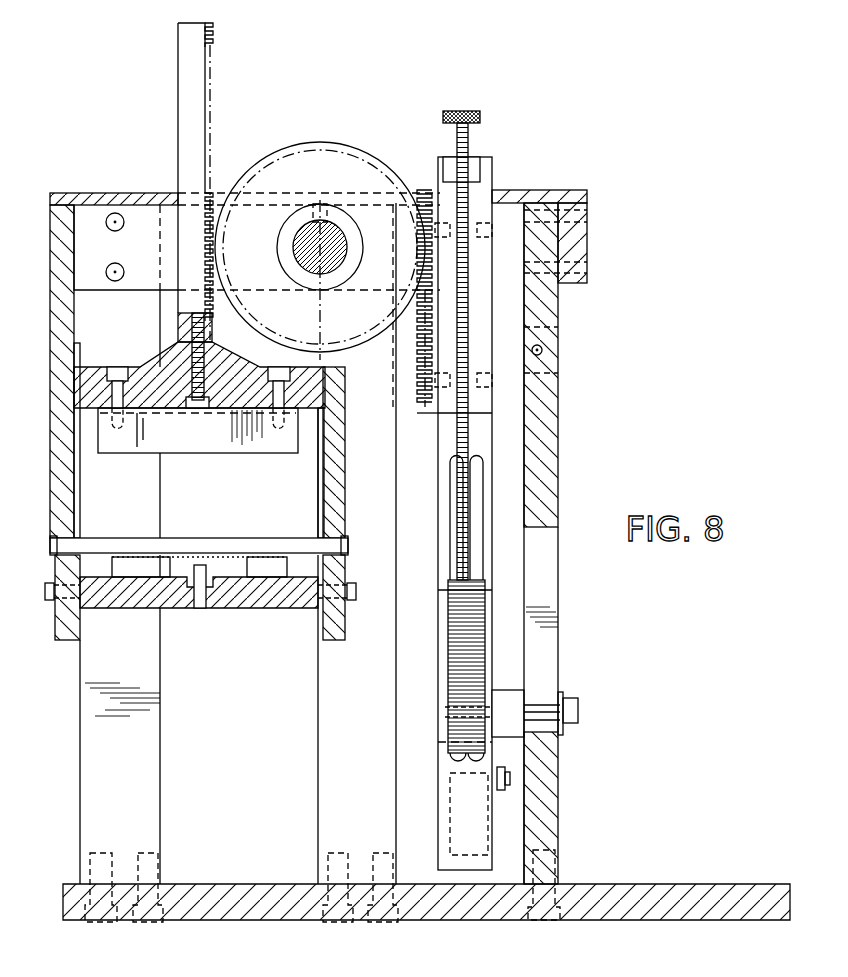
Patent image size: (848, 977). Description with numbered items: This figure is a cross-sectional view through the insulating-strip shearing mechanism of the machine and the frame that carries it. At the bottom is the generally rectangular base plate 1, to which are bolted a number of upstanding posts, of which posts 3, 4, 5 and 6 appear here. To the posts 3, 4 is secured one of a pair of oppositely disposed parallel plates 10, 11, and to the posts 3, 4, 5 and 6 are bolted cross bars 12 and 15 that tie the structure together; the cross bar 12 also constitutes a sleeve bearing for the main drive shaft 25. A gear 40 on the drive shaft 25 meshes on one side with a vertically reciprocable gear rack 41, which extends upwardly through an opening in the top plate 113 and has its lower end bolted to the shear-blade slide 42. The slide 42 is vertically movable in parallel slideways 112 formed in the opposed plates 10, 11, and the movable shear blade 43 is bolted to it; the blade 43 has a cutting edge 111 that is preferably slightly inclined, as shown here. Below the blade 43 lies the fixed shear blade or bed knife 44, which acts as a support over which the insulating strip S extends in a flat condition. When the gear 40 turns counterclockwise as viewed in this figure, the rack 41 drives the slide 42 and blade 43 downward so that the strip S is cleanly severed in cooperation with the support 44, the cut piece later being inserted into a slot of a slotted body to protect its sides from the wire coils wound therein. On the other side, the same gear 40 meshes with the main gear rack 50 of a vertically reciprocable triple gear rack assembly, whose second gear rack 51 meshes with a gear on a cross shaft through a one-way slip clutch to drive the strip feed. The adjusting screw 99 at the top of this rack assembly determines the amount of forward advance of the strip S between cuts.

The base plate 1 is at (655, 884).
The upstanding post 3 is at (147, 757).
The upstanding post 4 is at (318, 663).
The upstanding post 5 is at (510, 437).
The upstanding post 6 is at (553, 470).
The parallel plate 10 is at (343, 497).
The parallel plate 11 is at (55, 516).
The cross bar 12 is at (90, 258).
The cross bar 15 is at (588, 248).
The drive shaft 25 is at (328, 263).
The gear 40 is at (274, 152).
The gear rack 41 is at (210, 103).
The slide 42 is at (167, 348).
The shear blade 43 is at (148, 440).
The bed knife 44 is at (170, 567).
The main gear rack 50 is at (425, 407).
The second gear rack 51 is at (453, 647).
The adjusting screw 99 is at (470, 137).
The edge 111 is at (213, 453).
The slideways 112 is at (80, 487).
The top plate 113 is at (108, 193).
The insulating strip S is at (225, 555).